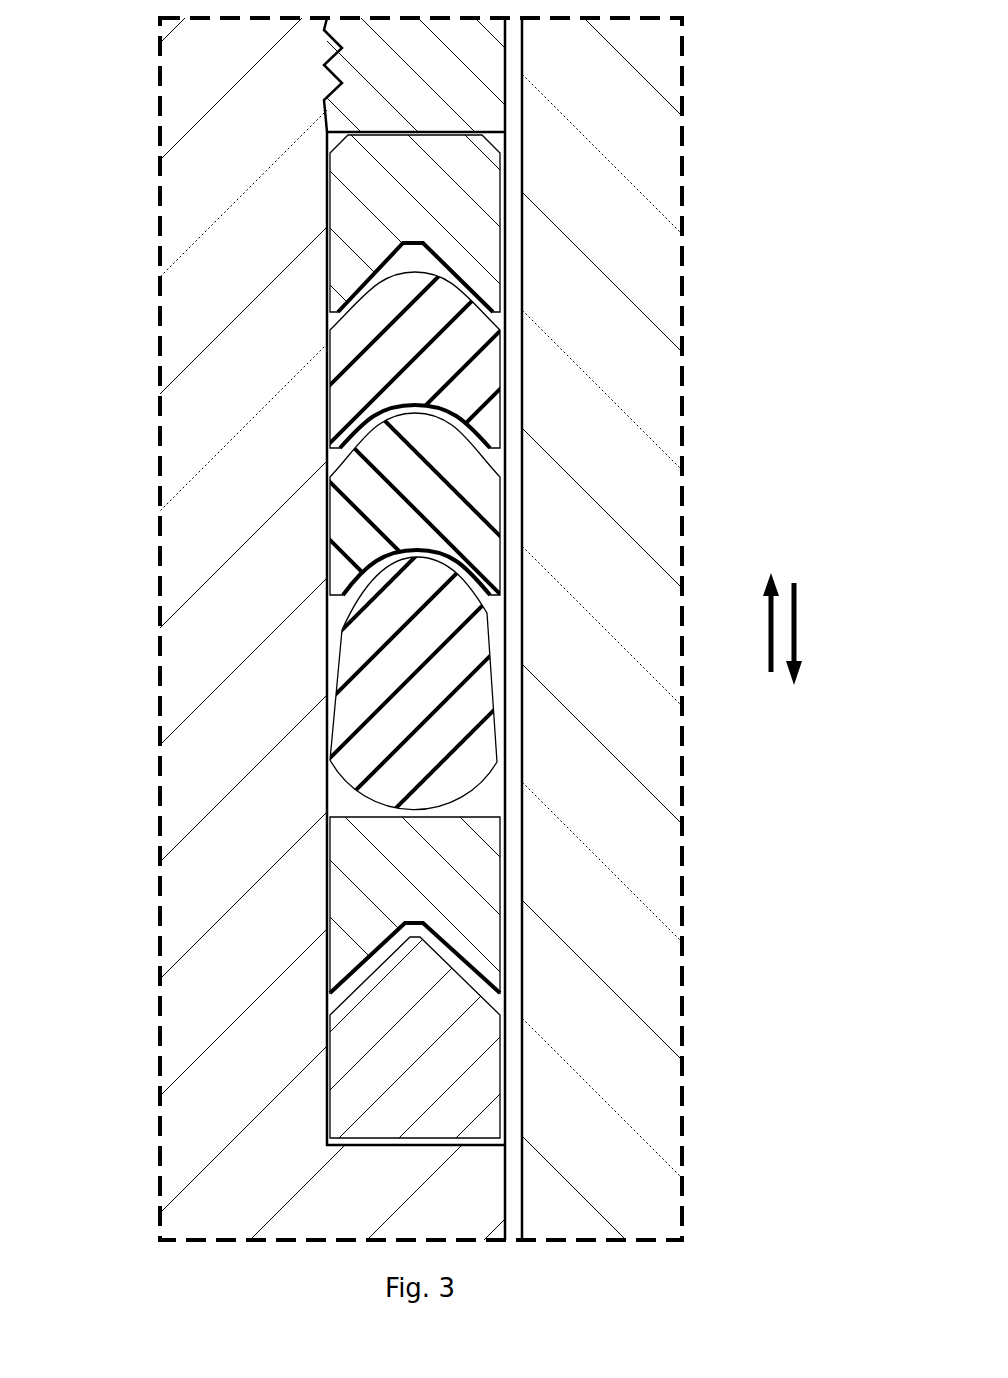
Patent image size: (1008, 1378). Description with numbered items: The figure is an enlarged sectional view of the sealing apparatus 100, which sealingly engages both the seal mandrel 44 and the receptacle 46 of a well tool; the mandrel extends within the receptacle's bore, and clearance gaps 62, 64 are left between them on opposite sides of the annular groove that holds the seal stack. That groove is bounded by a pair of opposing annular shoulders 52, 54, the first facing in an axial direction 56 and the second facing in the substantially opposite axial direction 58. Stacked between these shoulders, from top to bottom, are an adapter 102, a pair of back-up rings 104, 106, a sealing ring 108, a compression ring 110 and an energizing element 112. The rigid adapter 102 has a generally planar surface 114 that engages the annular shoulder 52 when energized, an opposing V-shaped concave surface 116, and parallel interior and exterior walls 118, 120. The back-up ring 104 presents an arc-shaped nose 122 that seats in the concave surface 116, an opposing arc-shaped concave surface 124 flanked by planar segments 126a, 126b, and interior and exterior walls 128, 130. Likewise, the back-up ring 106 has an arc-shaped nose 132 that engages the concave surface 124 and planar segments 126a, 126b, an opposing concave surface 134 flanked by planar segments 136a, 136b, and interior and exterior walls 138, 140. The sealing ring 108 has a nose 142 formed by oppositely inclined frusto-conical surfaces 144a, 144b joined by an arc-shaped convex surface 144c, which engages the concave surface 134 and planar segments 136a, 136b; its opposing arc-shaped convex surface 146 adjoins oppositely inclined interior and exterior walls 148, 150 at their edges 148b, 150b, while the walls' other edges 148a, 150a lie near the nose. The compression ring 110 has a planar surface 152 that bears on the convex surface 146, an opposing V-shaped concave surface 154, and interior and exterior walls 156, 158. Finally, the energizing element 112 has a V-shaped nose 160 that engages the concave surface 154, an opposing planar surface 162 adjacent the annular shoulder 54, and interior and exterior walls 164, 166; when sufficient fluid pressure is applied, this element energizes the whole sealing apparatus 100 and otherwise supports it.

The sealing apparatus 100 is at (142, 188).
The seal mandrel 44 is at (234, 1200).
The receptacle 46 is at (609, 1197).
The annular shoulder 52 is at (517, 150).
The annular shoulder 54 is at (522, 1130).
The axial direction 56 is at (797, 623).
The axial direction 58 is at (770, 633).
The clearance gap 62 is at (517, 53).
The clearance gap 64 is at (520, 1225).
The adapter 102 is at (418, 194).
The back-up ring 104 is at (350, 360).
The back-up ring 106 is at (348, 531).
The sealing ring 108 is at (388, 695).
The compression ring 110 is at (388, 896).
The energizing element 112 is at (388, 1076).
The planar surface 114 is at (428, 131).
The concave surface 116 is at (421, 258).
The interior wall 118 is at (327, 192).
The exterior wall 120 is at (517, 273).
The nose 122 is at (394, 262).
The concave surface 124 is at (403, 418).
The planar segment 126a is at (328, 462).
The planar segment 126b is at (507, 458).
The interior wall 128 is at (328, 368).
The exterior wall 130 is at (507, 372).
The nose 132 is at (448, 410).
The concave surface 134 is at (445, 574).
The planar segment 136a is at (340, 600).
The planar segment 136b is at (507, 605).
The interior wall 138 is at (328, 518).
The exterior wall 140 is at (507, 505).
The nose 142 is at (328, 566).
The inclined surface 144a is at (331, 588).
The inclined surface 144b is at (522, 577).
The convex surface 144c is at (426, 552).
The convex surface 146 is at (345, 806).
The interior wall 148 is at (340, 680).
The edge 148a is at (345, 637).
The edge 148b is at (330, 760).
The exterior wall 150 is at (522, 690).
The edge 150a is at (522, 627).
The edge 150b is at (522, 777).
The planar surface 152 is at (522, 812).
The concave surface 154 is at (450, 951).
The interior wall 156 is at (328, 892).
The exterior wall 158 is at (508, 888).
The nose 160 is at (344, 978).
The planar surface 162 is at (395, 1147).
The interior wall 164 is at (328, 1045).
The exterior wall 166 is at (508, 1095).